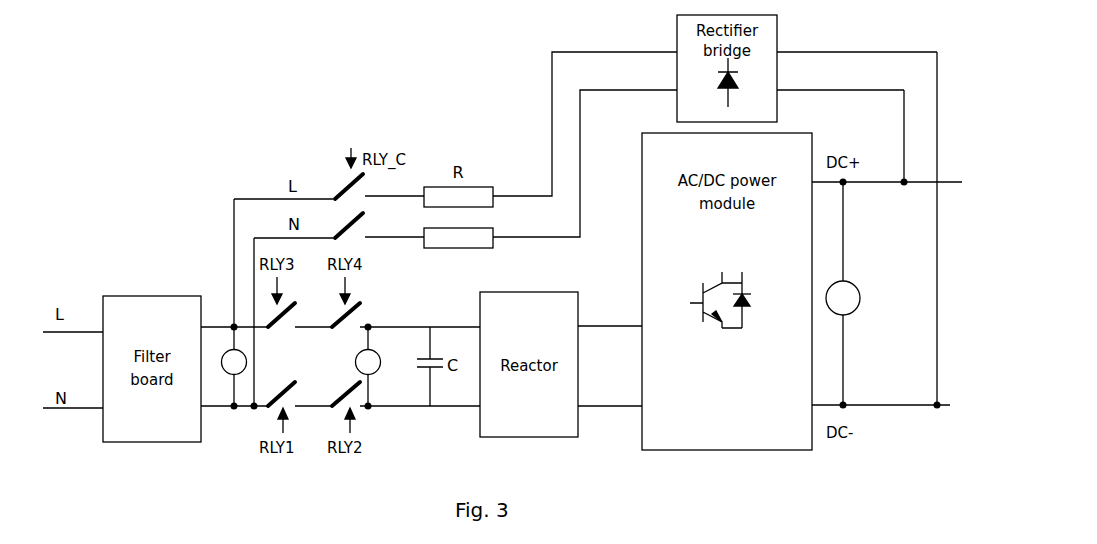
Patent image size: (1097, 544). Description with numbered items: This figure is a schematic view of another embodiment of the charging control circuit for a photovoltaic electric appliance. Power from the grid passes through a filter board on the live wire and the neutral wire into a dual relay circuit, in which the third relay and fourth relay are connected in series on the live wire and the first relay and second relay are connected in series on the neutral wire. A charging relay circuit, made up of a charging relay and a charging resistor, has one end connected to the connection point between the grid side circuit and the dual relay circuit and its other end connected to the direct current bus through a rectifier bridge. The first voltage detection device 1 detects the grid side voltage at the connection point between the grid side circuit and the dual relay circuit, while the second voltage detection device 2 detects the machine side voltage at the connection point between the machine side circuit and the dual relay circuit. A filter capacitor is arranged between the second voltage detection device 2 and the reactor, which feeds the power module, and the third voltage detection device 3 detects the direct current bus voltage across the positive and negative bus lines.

The first voltage detection device 1 is at (229, 366).
The second voltage detection device 2 is at (363, 366).
The third voltage detection device 3 is at (854, 293).